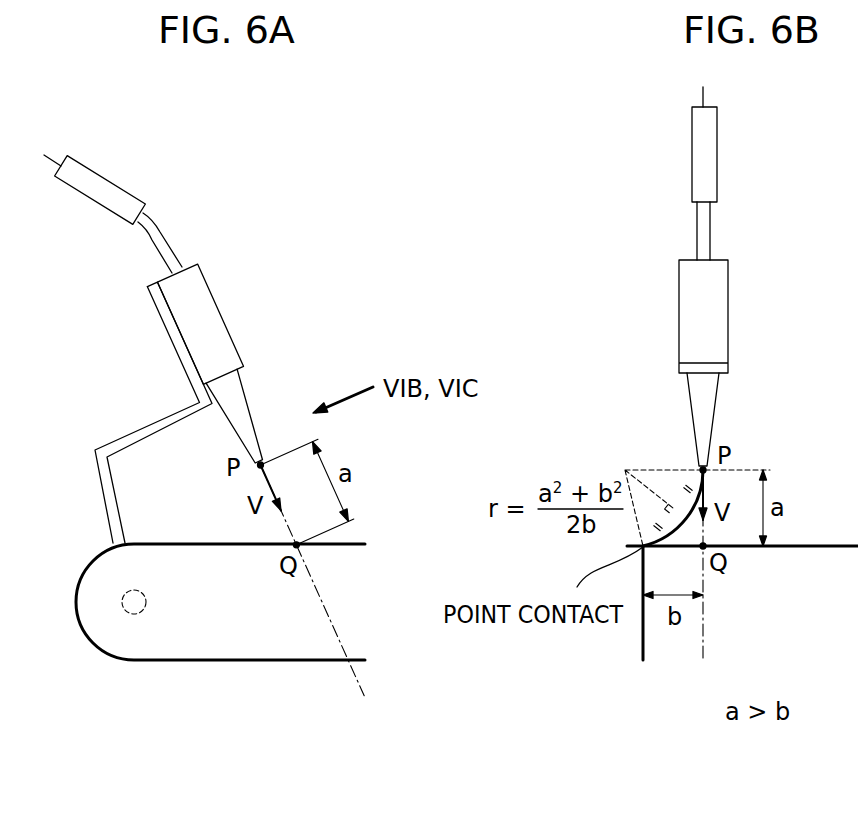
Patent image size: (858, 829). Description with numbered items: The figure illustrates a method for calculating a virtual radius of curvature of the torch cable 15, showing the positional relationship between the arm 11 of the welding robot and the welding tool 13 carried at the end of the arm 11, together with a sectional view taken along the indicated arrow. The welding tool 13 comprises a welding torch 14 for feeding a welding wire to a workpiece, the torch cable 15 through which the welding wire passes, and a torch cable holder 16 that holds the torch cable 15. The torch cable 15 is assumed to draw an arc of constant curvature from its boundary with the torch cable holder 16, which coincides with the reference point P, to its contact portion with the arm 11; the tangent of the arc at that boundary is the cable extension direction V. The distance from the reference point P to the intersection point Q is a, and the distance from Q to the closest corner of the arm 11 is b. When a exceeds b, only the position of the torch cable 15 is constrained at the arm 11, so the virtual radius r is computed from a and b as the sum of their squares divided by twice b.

In FIG. 6A, the arm 11 is at (208, 662).
In FIG. 6B, the arm 11 is at (643, 637).
In FIG. 6A, the welding tool 13 is at (190, 333).
In FIG. 6B, the welding tool 13 is at (768, 276).
In FIG. 6A, the welding torch 14 is at (108, 182).
In FIG. 6B, the welding torch 14 is at (717, 152).
In FIG. 6B, the torch cable 15 is at (692, 506).
In FIG. 6A, the torch cable holder 16 is at (250, 405).
In FIG. 6B, the torch cable holder 16 is at (718, 406).